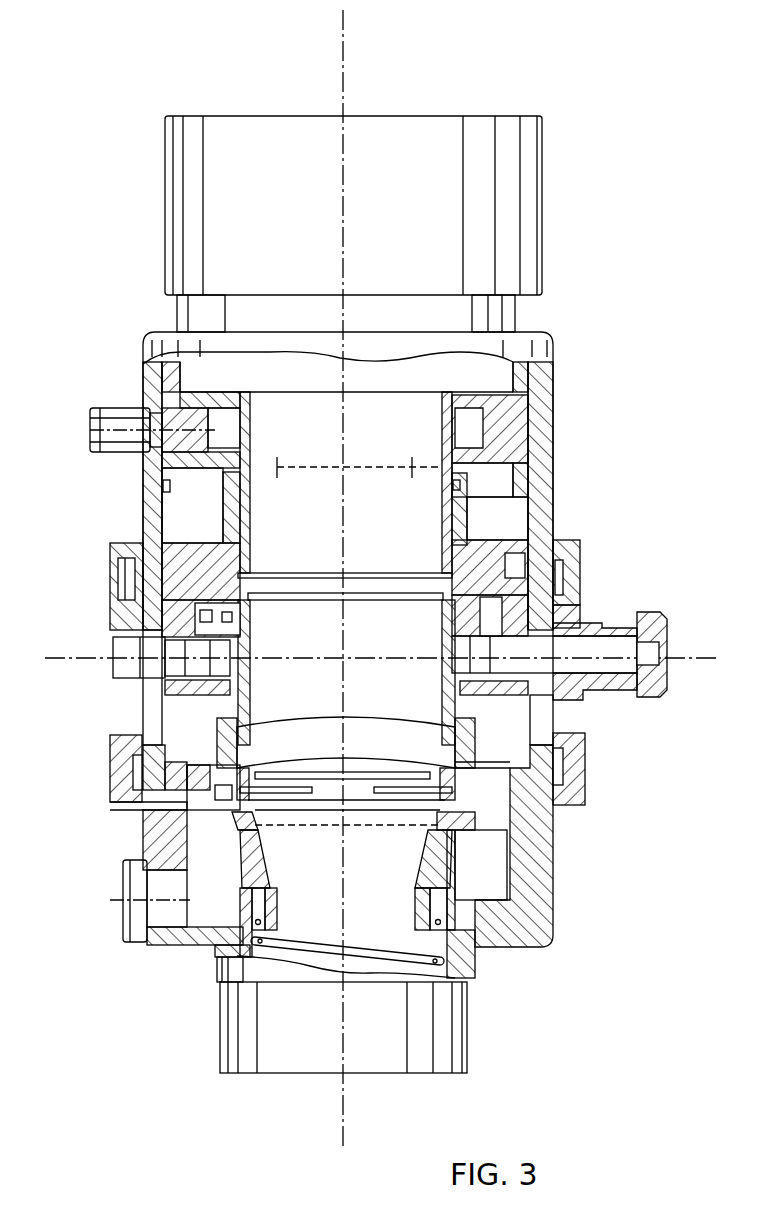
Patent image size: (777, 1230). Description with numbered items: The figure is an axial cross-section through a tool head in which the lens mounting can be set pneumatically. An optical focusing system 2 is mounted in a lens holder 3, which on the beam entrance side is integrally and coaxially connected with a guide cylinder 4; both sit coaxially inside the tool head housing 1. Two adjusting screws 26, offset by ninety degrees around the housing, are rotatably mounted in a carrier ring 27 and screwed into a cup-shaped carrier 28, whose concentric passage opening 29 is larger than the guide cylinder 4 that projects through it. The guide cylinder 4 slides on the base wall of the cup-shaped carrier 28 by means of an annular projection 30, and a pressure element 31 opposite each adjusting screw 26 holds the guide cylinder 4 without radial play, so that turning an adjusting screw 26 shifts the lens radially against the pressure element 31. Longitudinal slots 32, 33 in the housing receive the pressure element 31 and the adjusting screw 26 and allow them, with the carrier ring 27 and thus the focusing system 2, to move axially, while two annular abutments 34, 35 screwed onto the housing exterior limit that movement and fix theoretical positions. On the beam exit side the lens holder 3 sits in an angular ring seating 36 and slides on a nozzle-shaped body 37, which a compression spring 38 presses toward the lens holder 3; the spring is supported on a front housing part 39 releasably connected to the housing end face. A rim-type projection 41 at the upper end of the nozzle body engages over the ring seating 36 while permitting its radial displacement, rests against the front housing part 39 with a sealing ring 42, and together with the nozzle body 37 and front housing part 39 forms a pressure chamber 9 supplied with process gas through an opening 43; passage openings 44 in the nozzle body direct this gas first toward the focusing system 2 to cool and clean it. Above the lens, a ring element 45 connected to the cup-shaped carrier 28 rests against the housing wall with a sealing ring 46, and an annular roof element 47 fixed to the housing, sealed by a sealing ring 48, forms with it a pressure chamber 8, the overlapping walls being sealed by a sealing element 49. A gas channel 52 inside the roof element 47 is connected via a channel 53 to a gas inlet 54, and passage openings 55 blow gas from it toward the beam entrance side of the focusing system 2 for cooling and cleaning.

The tool head housing 1 is at (520, 380).
The optical focusing system 2 is at (290, 730).
The lens holder 3 is at (465, 757).
The guide cylinder 4 is at (450, 712).
The pressure chamber 8 is at (188, 517).
The pressure chamber 9 is at (210, 843).
The adjusting screws 26 is at (667, 636).
The carrier ring 27 is at (560, 620).
The cup-shaped carrier 28 is at (520, 698).
The passage opening 29 is at (240, 690).
The projection 30 is at (240, 640).
The pressure element 31 is at (130, 655).
The longitudinal slot 32 is at (150, 740).
The longitudinal slot 33 is at (540, 725).
The annular abutment 34 is at (580, 590).
The annular abutment 35 is at (580, 795).
The angular ring seating 36 is at (472, 830).
The nozzle-shaped body 37 is at (428, 892).
The compression spring 38 is at (470, 960).
The front housing part 39 is at (432, 1010).
The rim-type projection 41 is at (242, 830).
The sealing ring 42 is at (120, 795).
The opening 43 is at (165, 915).
The passage openings 44 is at (442, 825).
The ring element 45 is at (520, 540).
The sealing ring 46 is at (530, 562).
The annular roof element 47 is at (517, 430).
The sealing ring 48 is at (528, 493).
The sealing element 49 is at (452, 483).
The gas channel 52 is at (225, 420).
The channel 53 is at (150, 392).
The gas inlet 54 is at (118, 440).
The passage openings 55 is at (442, 458).